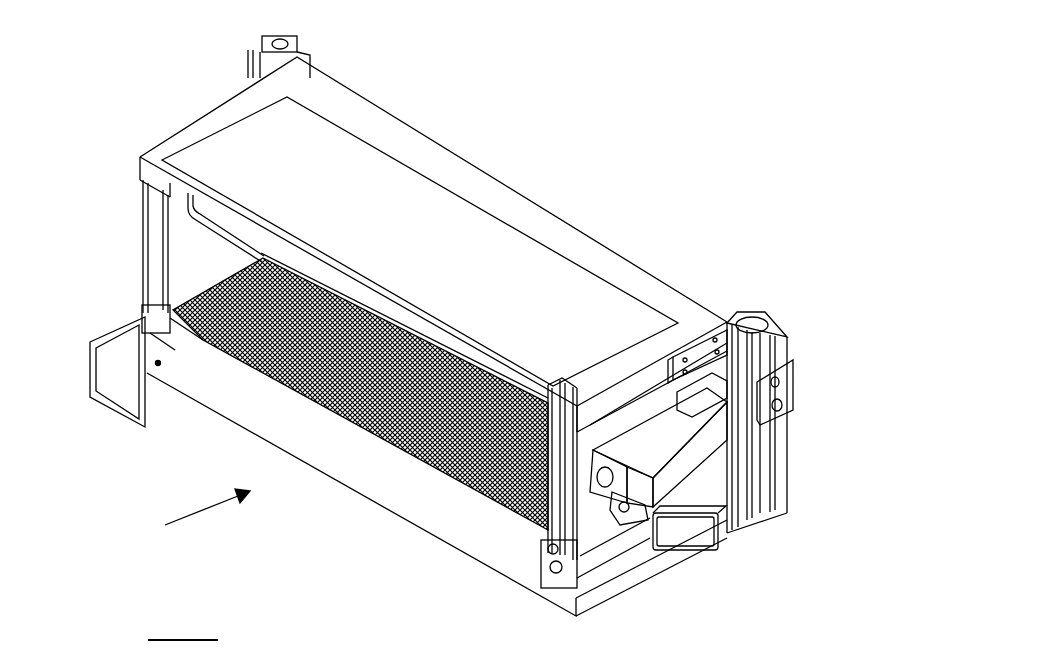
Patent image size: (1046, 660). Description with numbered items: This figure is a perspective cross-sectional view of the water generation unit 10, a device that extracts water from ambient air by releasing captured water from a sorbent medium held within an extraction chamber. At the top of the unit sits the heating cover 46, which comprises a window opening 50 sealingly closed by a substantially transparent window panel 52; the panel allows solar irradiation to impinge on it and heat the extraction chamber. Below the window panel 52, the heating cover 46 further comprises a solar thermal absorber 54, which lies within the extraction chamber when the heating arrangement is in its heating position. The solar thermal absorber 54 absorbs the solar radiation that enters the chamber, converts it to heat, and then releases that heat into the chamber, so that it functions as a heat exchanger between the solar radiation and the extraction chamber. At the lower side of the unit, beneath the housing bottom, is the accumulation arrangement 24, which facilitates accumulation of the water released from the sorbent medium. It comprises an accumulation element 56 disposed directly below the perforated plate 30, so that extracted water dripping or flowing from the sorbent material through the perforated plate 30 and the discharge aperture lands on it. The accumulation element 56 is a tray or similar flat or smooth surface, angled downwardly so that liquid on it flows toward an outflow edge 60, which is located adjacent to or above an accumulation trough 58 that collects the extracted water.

The water generation unit 10 is at (792, 205).
The accumulation arrangement 24 is at (193, 514).
The perforated plate 30 is at (257, 313).
The heating cover 46 is at (231, 112).
The window opening 50 is at (185, 160).
The window panel 52 is at (402, 212).
The solar thermal absorber 54 is at (270, 245).
The accumulation element 56 is at (283, 430).
The accumulation trough 58 is at (132, 395).
The outflow edge 60 is at (156, 364).